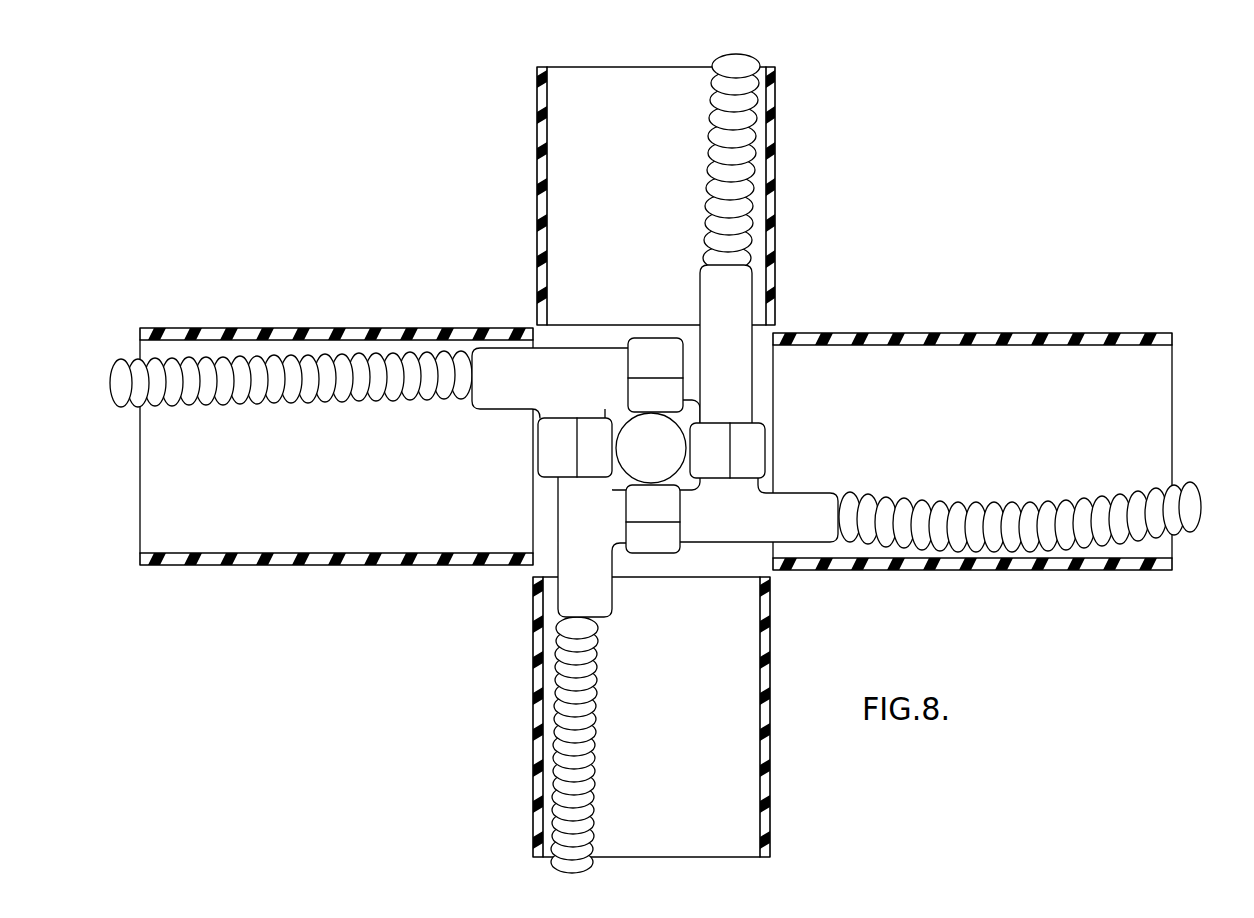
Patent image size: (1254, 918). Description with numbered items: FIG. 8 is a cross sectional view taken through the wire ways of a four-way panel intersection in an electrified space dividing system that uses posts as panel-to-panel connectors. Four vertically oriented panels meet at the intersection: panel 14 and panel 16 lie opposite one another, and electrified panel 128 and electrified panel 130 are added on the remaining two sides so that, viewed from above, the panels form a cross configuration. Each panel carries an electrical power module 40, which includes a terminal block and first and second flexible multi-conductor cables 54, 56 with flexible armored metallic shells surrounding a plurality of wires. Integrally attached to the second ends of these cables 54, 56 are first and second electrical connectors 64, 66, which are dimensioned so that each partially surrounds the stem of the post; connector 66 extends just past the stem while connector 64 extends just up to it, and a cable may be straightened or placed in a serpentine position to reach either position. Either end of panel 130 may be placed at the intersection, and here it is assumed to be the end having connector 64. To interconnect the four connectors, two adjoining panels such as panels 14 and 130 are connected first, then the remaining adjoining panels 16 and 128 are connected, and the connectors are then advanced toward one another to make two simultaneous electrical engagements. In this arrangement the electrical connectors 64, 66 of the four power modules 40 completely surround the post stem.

The panel 14 is at (366, 330).
The panel 16 is at (963, 334).
The electrical power module 40 is at (700, 102).
The first flexible multi-conductor cable 54 is at (1022, 508).
The second flexible multi-conductor cable 56 is at (320, 397).
The first electrical connector 64 is at (736, 368).
The second electrical connector 66 is at (598, 365).
The electrified panel 128 is at (770, 800).
The electrified panel 130 is at (775, 124).